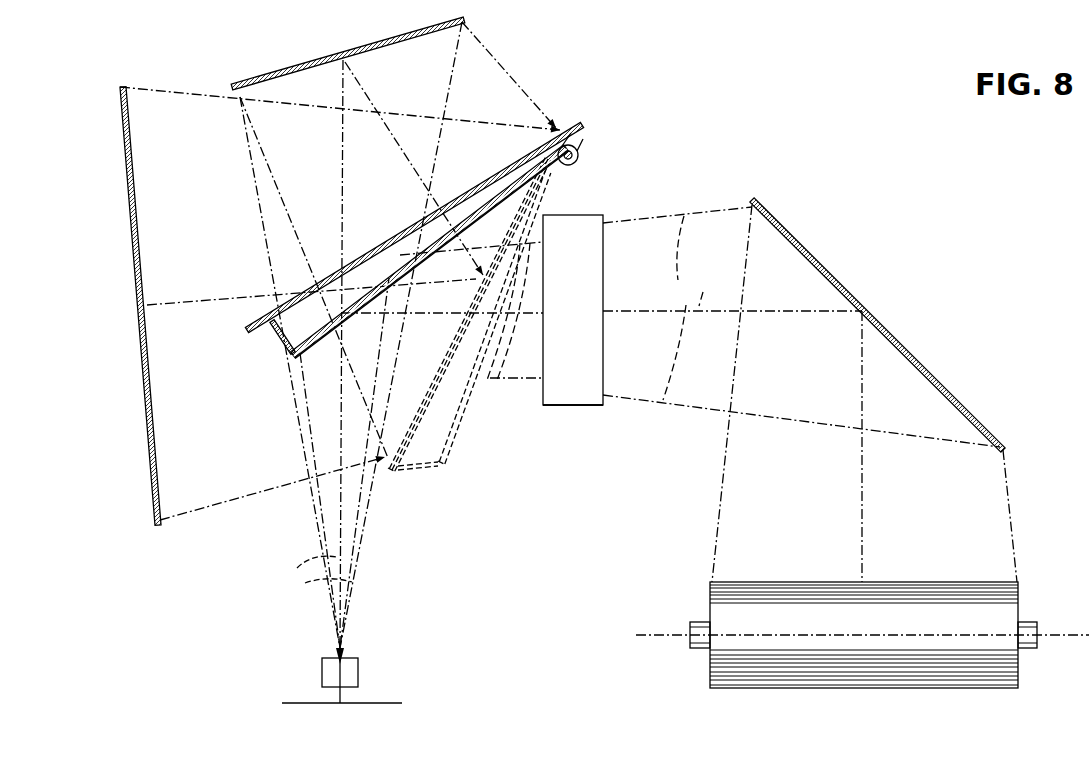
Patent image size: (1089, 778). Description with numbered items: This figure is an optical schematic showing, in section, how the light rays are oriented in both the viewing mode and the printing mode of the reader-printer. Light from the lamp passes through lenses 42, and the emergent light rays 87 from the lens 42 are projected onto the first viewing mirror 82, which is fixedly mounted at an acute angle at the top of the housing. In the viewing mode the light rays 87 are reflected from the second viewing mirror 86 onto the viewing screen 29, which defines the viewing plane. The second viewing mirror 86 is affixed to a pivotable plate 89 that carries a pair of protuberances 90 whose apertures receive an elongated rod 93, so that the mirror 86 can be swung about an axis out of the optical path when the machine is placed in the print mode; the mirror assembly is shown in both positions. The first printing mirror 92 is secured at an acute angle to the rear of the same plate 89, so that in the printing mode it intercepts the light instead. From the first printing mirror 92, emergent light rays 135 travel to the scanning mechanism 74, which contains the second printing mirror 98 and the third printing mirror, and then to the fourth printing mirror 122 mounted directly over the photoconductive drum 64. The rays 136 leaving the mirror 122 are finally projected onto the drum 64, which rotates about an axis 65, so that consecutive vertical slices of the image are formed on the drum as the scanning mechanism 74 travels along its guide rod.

The viewing screen 29 is at (140, 372).
The lenses 42 is at (322, 672).
The photoconductive drum 64 is at (1002, 606).
The axis 65 is at (862, 650).
The scanning mechanism 74 is at (584, 330).
The first viewing mirror 82 is at (392, 44).
The second viewing mirror 86 is at (460, 188).
The emergent light rays 87 is at (320, 578).
The pivotable plate 89 is at (262, 335).
The protuberances 90 is at (578, 143).
The first printing mirror 92 is at (312, 365).
The elongated rod 93 is at (584, 158).
The second printing mirror 98 is at (558, 398).
The fourth printing mirror 122 is at (925, 378).
The emergent light rays 135 is at (508, 330).
The light beam bundle 136 is at (683, 308).